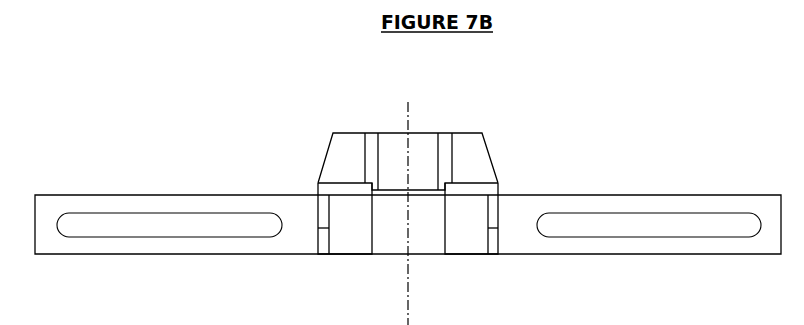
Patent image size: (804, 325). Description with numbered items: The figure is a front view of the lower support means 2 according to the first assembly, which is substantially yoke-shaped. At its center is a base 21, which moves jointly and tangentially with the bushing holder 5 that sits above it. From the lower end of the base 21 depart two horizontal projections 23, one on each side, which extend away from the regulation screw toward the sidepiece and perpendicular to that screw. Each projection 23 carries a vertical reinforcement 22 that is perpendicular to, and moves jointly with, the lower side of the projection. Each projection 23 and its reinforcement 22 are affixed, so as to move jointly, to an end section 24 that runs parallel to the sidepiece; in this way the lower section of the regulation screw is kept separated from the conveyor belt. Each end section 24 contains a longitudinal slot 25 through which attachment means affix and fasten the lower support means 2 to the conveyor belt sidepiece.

The lower support means 2 is at (230, 203).
The bushing holder 5 is at (437, 173).
The base 21 is at (467, 142).
The vertical reinforcement 22 is at (327, 237).
The horizontal projection 23 is at (325, 190).
The end section 24 is at (641, 205).
The longitudinal slot 25 is at (672, 218).